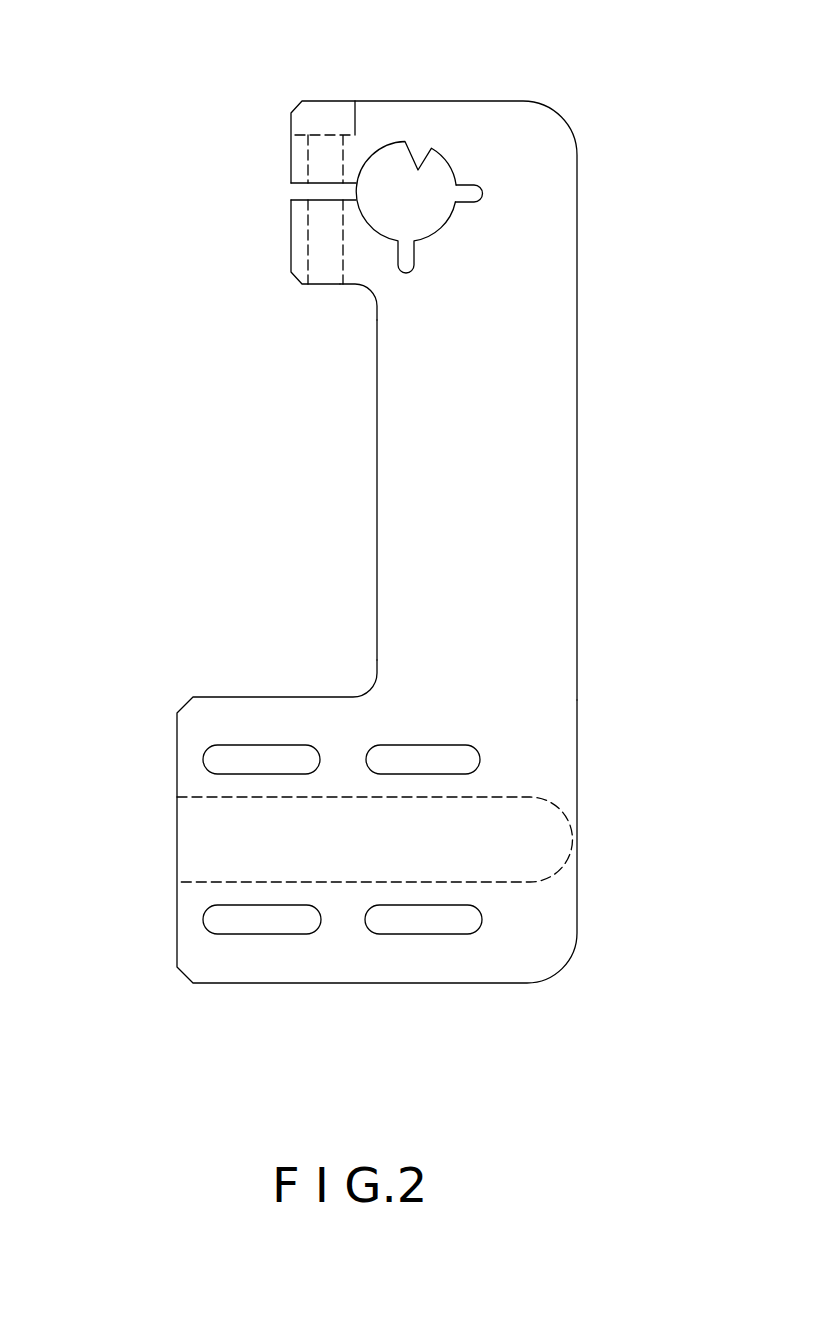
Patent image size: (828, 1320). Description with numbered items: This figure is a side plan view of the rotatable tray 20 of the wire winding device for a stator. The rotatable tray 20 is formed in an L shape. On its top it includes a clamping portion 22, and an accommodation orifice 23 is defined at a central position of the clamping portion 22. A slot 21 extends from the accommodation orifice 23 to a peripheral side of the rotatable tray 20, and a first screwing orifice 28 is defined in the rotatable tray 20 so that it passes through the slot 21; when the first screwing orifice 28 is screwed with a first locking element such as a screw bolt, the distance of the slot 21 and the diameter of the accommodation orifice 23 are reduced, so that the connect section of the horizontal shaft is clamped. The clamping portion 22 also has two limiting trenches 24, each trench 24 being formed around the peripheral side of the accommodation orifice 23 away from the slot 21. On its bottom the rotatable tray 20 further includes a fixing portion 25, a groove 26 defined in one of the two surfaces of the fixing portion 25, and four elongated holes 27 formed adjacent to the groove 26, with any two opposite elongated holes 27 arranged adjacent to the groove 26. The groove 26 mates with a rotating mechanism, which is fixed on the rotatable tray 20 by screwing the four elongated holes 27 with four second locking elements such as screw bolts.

The rotatable tray 20 is at (422, 485).
The slot 21 is at (300, 192).
The clamping portion 22 is at (382, 273).
The accommodation orifice 23 is at (418, 170).
The limiting trench 24 is at (473, 192).
The fixing portion 25 is at (353, 970).
The groove 26 is at (530, 797).
The elongated hole 27 is at (217, 758).
The first screwing orifice 28 is at (327, 117).